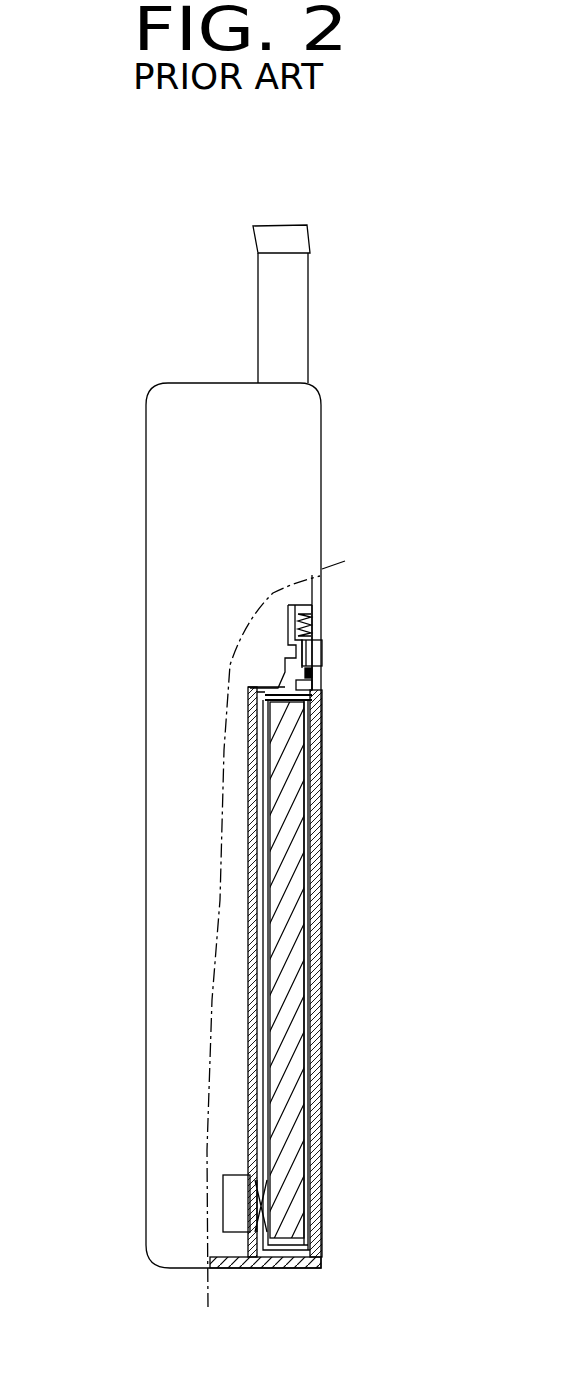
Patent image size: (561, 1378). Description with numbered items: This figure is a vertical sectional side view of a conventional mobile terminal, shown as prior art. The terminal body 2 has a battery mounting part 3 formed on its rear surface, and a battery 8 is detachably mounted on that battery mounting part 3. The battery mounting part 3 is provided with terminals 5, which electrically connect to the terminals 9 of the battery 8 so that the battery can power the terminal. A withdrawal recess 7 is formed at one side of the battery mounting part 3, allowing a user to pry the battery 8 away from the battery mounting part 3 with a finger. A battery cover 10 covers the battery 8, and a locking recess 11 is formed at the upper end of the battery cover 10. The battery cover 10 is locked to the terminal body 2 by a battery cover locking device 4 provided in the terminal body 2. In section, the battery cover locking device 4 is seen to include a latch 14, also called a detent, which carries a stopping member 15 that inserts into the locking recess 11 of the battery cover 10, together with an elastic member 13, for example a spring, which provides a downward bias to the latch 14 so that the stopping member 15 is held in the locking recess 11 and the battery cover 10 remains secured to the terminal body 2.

The terminal body 2 is at (168, 737).
The battery mounting part 3 is at (268, 903).
The battery cover locking device 4 is at (440, 585).
The terminals 5 is at (250, 1175).
The withdrawal recess 7 is at (323, 702).
The battery 8 is at (292, 1017).
The terminals of the battery 9 is at (250, 1232).
The battery cover 10 is at (322, 932).
The locking recess 11 is at (323, 688).
The elastic member 13 is at (314, 618).
The latch 14 is at (318, 650).
The stopping member 15 is at (322, 670).